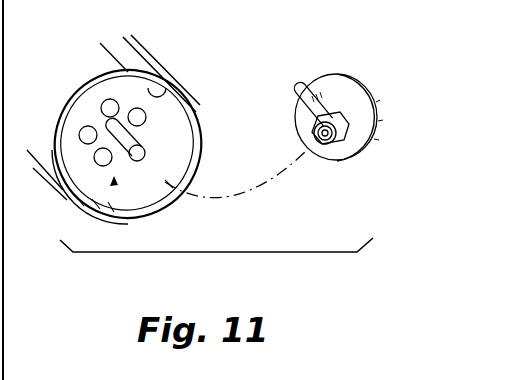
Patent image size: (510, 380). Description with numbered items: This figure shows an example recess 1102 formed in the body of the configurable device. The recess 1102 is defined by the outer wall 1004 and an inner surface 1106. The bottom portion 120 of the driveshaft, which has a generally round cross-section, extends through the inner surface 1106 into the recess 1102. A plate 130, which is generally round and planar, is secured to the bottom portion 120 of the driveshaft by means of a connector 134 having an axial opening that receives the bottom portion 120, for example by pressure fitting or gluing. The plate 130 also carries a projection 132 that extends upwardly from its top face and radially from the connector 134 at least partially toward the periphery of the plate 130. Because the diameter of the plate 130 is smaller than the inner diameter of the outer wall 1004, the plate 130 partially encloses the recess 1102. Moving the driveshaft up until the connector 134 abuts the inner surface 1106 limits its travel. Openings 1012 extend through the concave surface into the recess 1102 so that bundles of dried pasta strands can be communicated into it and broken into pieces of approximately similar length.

The outer wall 1004 is at (200, 154).
The bottom portion 120 is at (143, 150).
The inner surface 1106 is at (170, 73).
The openings 1012 is at (72, 110).
The recess 1102 is at (114, 180).
The plate 130 is at (349, 70).
The projection 132 is at (300, 96).
The connector 134 is at (340, 128).